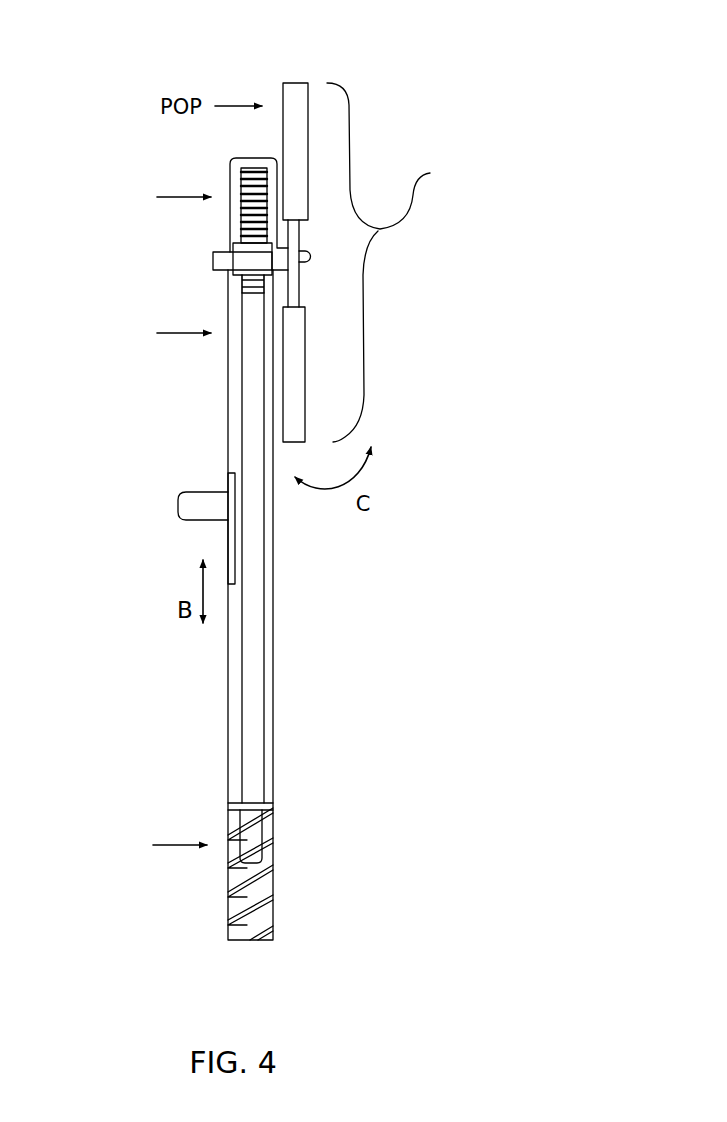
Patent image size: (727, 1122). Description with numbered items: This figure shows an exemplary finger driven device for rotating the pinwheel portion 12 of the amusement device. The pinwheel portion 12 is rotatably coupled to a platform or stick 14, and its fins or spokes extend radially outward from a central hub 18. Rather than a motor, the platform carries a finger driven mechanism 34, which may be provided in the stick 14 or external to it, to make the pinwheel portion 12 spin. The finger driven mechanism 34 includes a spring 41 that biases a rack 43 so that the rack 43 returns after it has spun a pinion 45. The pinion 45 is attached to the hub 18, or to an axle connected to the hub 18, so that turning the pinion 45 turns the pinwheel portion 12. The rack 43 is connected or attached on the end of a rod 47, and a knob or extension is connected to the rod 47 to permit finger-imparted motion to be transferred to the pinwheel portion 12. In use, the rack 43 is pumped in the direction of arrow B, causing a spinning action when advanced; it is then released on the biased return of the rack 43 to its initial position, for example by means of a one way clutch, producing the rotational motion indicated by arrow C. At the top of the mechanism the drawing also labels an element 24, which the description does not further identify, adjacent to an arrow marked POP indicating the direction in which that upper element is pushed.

The pinwheel portion 12 is at (395, 262).
The stick 14 is at (273, 598).
The central hub 18 is at (302, 278).
The pop plunger 24 is at (295, 85).
The finger driven mechanism 34 is at (216, 462).
The spring 41 is at (270, 870).
The rack 43 is at (238, 172).
The pinion 45 is at (232, 265).
The rod 47 is at (252, 652).